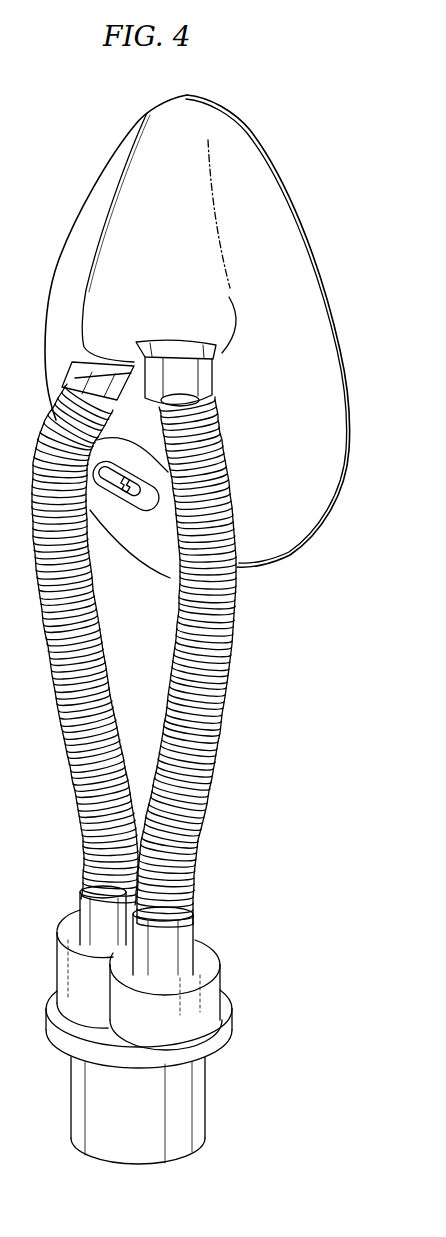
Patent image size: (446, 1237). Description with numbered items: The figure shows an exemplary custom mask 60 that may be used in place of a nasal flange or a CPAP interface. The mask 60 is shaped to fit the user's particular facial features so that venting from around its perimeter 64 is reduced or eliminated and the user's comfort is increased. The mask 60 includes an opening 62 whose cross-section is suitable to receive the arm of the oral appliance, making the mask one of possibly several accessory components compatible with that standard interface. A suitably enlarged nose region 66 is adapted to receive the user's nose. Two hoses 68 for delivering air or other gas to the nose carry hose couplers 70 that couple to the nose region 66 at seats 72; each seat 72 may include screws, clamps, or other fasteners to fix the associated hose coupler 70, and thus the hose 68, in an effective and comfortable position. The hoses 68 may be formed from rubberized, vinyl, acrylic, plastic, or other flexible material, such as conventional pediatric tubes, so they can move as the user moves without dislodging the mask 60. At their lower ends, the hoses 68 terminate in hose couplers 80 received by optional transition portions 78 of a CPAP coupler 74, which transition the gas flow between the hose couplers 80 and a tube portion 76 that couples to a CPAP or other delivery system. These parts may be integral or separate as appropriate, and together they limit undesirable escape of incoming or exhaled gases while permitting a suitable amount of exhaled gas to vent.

The custom mask 60 is at (293, 254).
The opening 62 is at (120, 505).
The perimeter 64 is at (264, 160).
The nose region 66 is at (128, 252).
The hoses 68 is at (62, 718).
The hose couplers 70 is at (80, 350).
The seats 72 is at (158, 350).
The CPAP coupler 74 is at (77, 1036).
The tube portion 76 is at (207, 1096).
The transition portions 78 is at (57, 967).
The hose couplers 80 is at (80, 898).